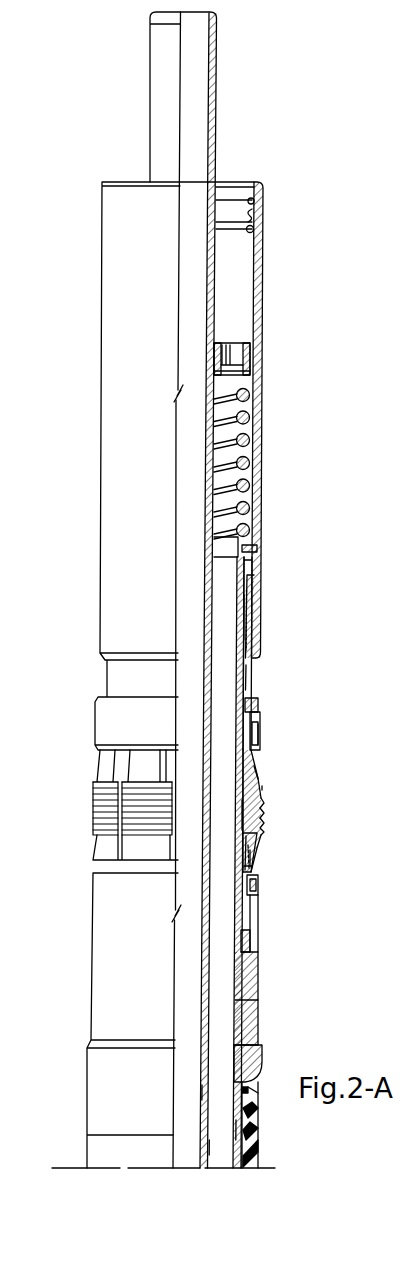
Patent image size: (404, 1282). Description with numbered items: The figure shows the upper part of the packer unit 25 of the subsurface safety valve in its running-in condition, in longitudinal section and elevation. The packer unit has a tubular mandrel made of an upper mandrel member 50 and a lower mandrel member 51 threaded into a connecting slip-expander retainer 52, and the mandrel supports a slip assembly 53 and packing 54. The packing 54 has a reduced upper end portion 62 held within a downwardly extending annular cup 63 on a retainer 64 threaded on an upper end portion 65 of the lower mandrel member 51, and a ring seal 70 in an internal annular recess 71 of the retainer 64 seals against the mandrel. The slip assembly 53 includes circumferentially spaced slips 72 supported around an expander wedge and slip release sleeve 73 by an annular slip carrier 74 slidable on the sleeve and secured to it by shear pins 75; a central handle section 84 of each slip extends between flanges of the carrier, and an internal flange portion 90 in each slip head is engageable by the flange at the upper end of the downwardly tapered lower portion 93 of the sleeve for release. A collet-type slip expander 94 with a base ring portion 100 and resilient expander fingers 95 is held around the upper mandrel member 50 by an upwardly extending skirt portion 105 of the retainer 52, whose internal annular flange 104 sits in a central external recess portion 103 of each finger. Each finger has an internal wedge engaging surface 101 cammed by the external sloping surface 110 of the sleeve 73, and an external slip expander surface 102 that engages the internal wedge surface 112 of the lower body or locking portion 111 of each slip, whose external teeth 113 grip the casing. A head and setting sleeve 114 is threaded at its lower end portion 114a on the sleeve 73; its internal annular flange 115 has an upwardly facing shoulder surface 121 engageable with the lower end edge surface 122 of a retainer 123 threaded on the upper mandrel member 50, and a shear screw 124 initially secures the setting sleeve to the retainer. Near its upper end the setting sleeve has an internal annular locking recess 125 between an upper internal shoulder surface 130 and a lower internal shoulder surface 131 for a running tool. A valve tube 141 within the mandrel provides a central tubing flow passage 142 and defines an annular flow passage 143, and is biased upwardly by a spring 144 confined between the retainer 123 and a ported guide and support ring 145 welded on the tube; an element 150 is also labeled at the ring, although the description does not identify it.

The packer unit 25 is at (104, 128).
The valve tube 141 is at (218, 157).
The central tubing flow passage 142 is at (200, 1093).
The annular flow passage 143 is at (208, 1148).
The upper internal shoulder surface 130 is at (255, 203).
The internal annular locking recess 125 is at (252, 217).
The lower internal shoulder surface 131 is at (254, 231).
The spring retainer cap 150 is at (246, 343).
The guide and support ring 145 is at (251, 351).
The spring 144 is at (250, 421).
The head and setting sleeve 114 is at (257, 441).
The lower end portion of setting sleeve 114a is at (256, 646).
The retainer 123 is at (256, 529).
The shear screw 124 is at (258, 549).
The upwardly facing shoulder surface 121 is at (257, 585).
The lower end edge surface 122 is at (246, 604).
The internal annular flange 115 is at (248, 621).
The expander wedge and slip release sleeve 73 is at (247, 677).
The upper mandrel member 50 is at (248, 691).
The shear pin 75 is at (258, 706).
The slip carrier 74 is at (256, 721).
The internal flange portion 90 is at (258, 732).
The central handle section 84 is at (261, 743).
The slips 72 is at (257, 766).
The downwardly tapered lower portion of sleeve 93 is at (258, 780).
The slip assembly 53 is at (273, 791).
The external sloping surface 110 is at (263, 803).
The lower body or locking portion 111 is at (263, 816).
The external teeth 113 is at (263, 830).
The internal wedge surface 112 is at (251, 820).
The slip expander surface 102 is at (256, 853).
The expander fingers 95 is at (253, 863).
The wedge engaging surface 101 is at (246, 862).
The slip expander 94 is at (246, 868).
The internal annular flange 104 is at (258, 885).
The central external recess portion 103 is at (257, 893).
The skirt portion 105 is at (259, 916).
The base ring portion 100 is at (247, 946).
The slip-expander retainer 52 is at (259, 998).
The upper end portion of lower mandrel 65 is at (259, 1019).
The retainer 64 is at (266, 1061).
The ring seal 70 is at (242, 1090).
The internal annular recess 71 is at (252, 1094).
The reduced upper end portion 62 is at (254, 1120).
The annular cup 63 is at (254, 1131).
The packing 54 is at (255, 1156).
The lower mandrel member 51 is at (235, 1130).